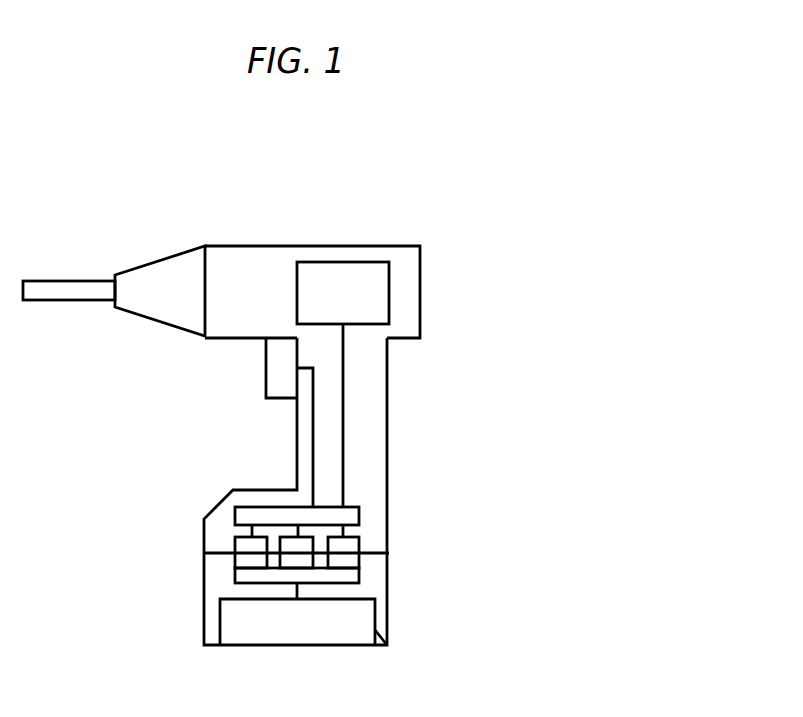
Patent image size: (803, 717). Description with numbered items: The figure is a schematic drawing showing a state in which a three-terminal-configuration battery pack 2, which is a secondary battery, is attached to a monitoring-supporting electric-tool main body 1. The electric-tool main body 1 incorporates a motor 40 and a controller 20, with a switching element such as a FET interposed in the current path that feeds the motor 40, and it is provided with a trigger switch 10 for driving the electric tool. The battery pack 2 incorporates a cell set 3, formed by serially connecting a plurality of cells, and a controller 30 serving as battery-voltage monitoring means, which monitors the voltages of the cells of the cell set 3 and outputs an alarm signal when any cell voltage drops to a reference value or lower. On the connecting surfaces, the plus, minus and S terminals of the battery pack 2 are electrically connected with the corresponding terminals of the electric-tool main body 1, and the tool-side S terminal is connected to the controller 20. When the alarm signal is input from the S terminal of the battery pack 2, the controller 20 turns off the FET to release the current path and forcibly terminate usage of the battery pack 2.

The electric-tool main body 1 is at (403, 243).
The motor 40 is at (389, 307).
The trigger switch 10 is at (266, 367).
The controller 20 is at (357, 520).
The controller 30 is at (235, 578).
The battery pack 2 is at (390, 607).
The cell set 3 is at (387, 645).